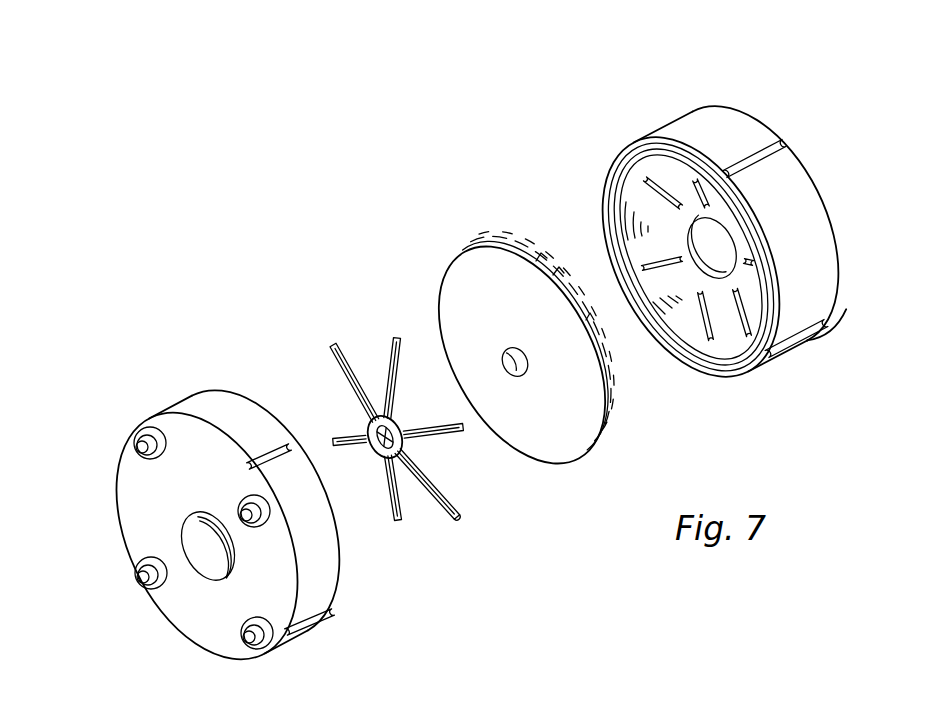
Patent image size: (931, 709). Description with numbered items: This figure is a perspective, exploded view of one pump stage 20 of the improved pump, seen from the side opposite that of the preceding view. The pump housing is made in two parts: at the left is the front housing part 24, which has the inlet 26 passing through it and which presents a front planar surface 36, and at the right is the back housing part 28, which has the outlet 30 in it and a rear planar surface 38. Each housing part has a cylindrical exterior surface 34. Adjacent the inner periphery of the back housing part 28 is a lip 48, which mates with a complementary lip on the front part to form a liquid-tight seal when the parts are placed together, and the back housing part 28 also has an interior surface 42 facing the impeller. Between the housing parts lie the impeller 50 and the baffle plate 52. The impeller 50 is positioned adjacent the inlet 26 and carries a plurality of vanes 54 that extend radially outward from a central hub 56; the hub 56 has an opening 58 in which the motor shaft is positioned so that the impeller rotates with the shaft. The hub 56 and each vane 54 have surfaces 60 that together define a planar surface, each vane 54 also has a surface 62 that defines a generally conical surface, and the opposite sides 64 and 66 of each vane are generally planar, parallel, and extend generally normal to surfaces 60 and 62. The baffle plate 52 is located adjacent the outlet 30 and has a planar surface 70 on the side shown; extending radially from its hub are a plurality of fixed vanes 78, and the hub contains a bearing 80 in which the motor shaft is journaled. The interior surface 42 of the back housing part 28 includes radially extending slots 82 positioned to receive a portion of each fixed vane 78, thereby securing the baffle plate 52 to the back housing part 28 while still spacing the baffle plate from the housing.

The pump stage 20 is at (374, 306).
The front housing part 24 is at (196, 519).
The inlet 26 is at (205, 555).
The back housing part 28 is at (702, 243).
The outlet 30 is at (714, 247).
The cylindrical exterior surface 34 is at (230, 422).
The front planar surface 36 is at (140, 500).
The rear planar surface 38 is at (795, 161).
The interior surface 42 is at (282, 440).
The lip 48 is at (617, 158).
The impeller 50 is at (387, 455).
The baffle plate 52 is at (526, 365).
The vanes 54 is at (383, 373).
The hub 56 is at (379, 452).
The opening 58 is at (378, 433).
The surfaces 60 is at (396, 508).
The surface 62 is at (400, 388).
The vane side 64 is at (447, 511).
The vane side 66 is at (435, 487).
The planar surface 70 is at (526, 347).
The fixed vanes 78 is at (587, 316).
The bearing 80 is at (503, 376).
The slots 82 is at (655, 193).